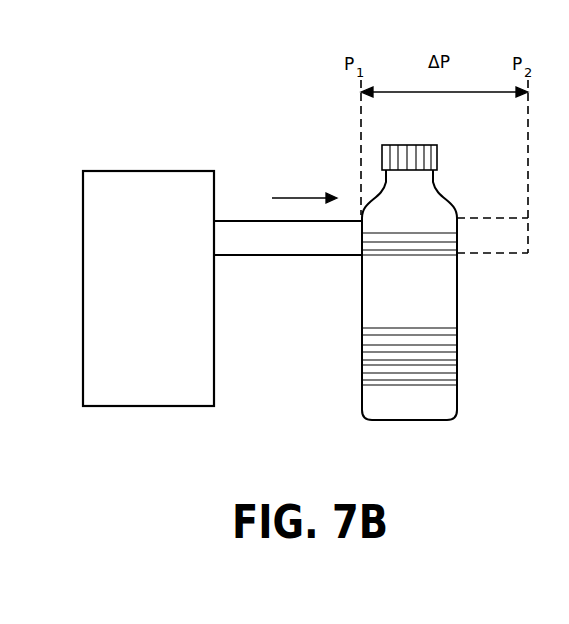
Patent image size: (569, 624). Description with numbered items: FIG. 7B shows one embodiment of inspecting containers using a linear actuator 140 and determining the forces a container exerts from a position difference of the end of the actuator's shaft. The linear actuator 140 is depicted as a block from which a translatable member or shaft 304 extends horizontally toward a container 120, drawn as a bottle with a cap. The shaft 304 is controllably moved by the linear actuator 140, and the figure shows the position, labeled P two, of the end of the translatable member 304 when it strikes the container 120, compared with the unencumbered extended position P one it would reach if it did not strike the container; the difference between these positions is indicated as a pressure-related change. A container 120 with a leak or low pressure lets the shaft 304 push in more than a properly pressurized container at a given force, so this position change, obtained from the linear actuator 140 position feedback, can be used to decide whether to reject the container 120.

The linear actuator 140 is at (150, 121).
The translatable member or shaft 304 is at (250, 220).
The container 120 is at (447, 373).